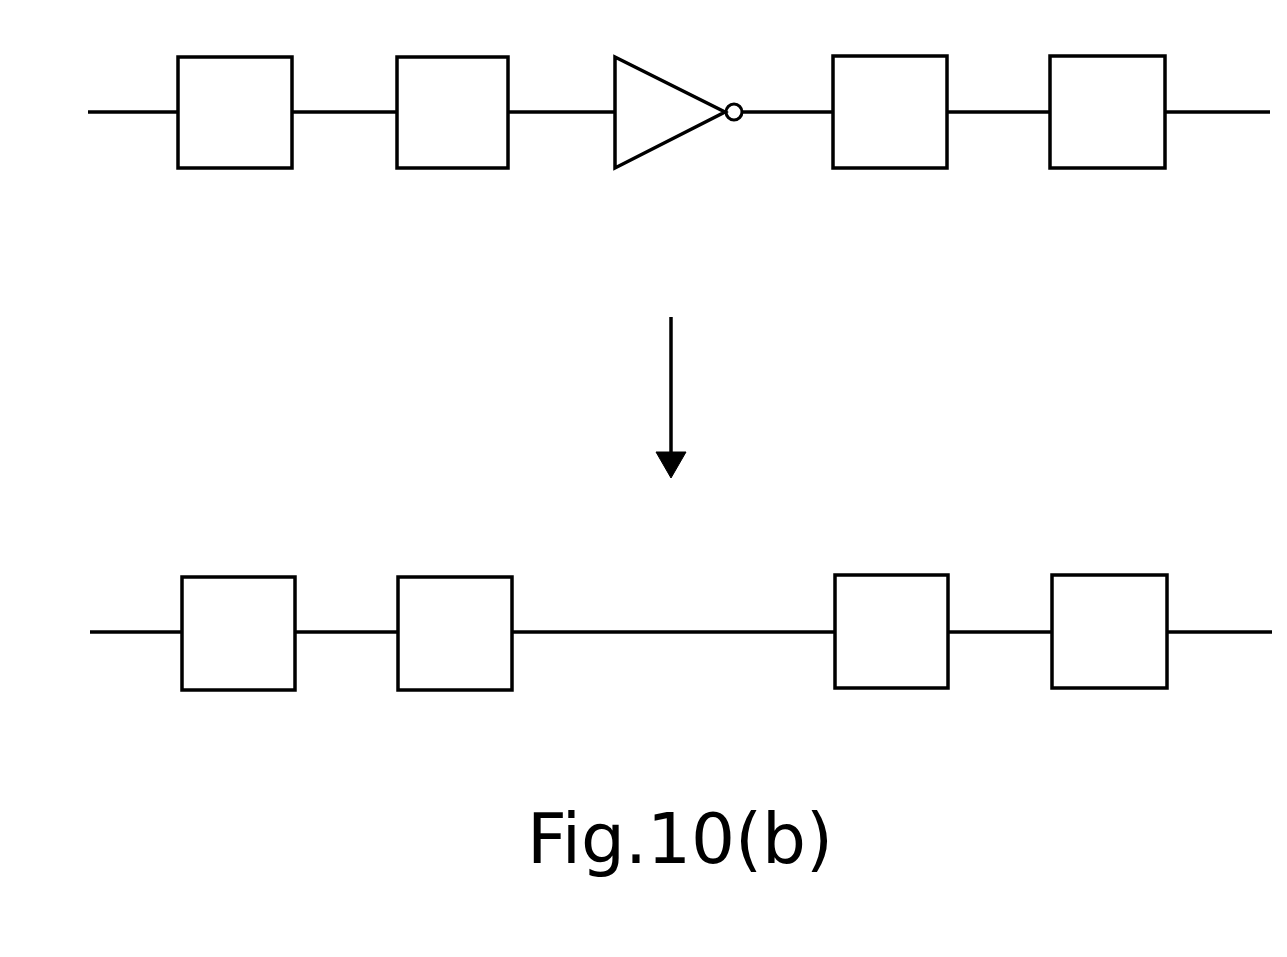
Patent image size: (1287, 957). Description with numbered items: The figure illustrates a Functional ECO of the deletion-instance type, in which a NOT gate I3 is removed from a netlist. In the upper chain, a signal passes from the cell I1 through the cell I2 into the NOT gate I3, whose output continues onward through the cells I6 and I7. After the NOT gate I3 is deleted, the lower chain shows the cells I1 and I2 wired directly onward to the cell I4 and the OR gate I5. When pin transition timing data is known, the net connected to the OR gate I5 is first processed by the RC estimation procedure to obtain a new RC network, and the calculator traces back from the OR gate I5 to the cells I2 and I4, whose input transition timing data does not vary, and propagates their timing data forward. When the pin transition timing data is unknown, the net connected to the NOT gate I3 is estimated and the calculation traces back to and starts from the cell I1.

The cell I1 is at (236, 405).
The cell I2 is at (454, 405).
The NOT gate I3 is at (678, 145).
The cell I4 is at (891, 664).
The OR gate I5 is at (1109, 664).
The logic instance I6 is at (890, 145).
The logic instance I7 is at (1107, 145).